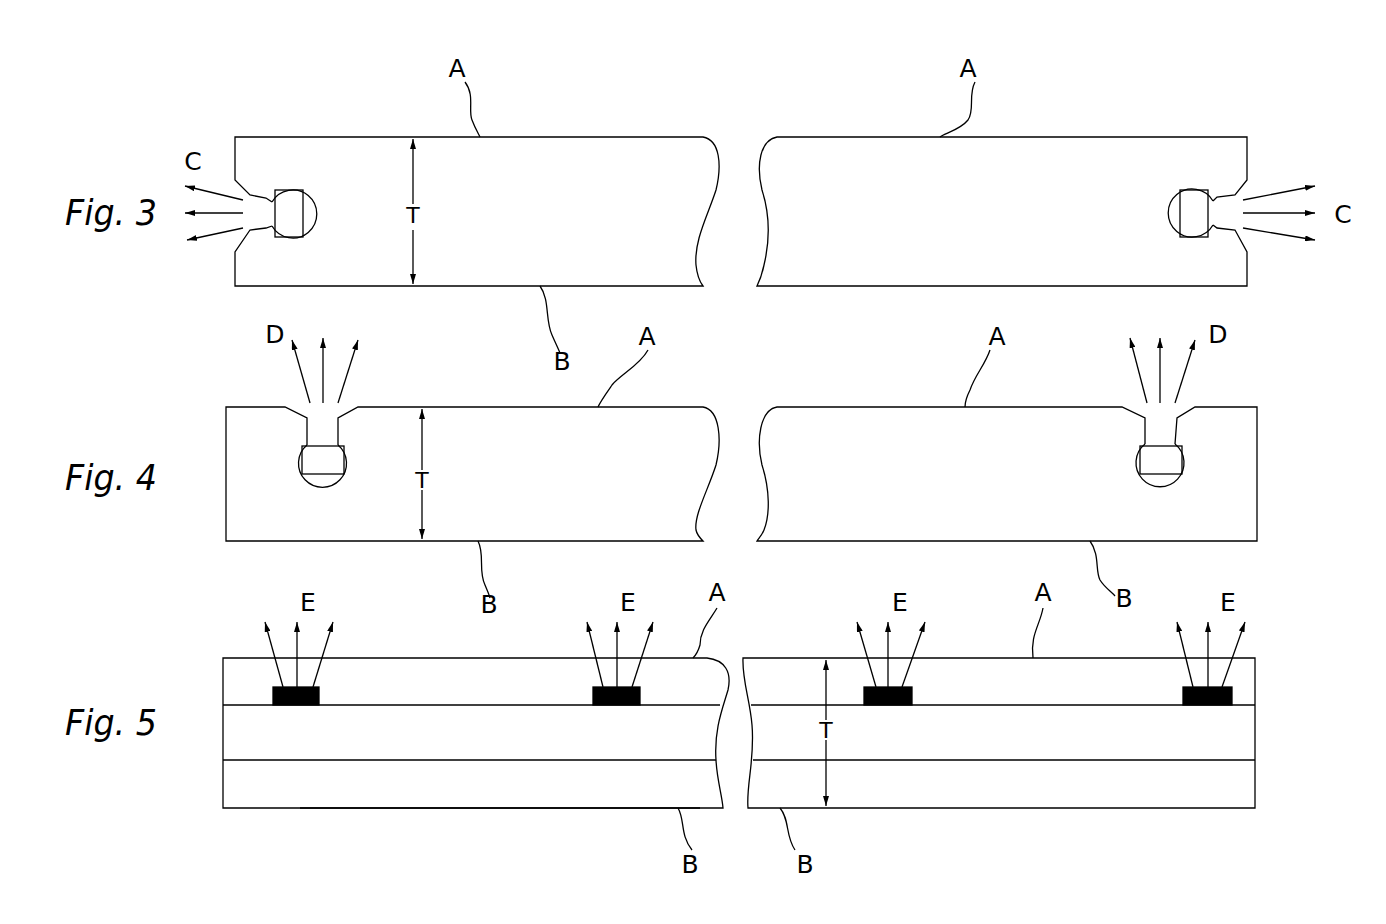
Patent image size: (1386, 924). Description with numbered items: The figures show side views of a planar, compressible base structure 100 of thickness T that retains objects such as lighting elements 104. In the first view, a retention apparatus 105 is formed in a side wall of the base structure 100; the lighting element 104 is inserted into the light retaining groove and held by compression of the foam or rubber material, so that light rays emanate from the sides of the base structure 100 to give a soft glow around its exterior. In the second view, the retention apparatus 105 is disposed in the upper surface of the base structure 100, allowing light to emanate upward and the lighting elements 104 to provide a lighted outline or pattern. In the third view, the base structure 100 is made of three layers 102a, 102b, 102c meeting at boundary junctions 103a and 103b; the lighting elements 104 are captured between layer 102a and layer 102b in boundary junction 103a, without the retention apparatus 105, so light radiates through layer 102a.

In FIG. 3, the base structure 100 is at (622, 190).
In FIG. 4, the base structure 100 is at (1273, 416).
In FIG. 5, the base structure 100 is at (1264, 718).
In FIG. 5, the layer 102a is at (418, 677).
In FIG. 5, the layer 102b is at (515, 737).
In FIG. 5, the layer 102c is at (563, 795).
In FIG. 5, the boundary junction 103a is at (1108, 705).
In FIG. 5, the boundary junction 103b is at (1003, 760).
In FIG. 3, the lighting element 104 is at (290, 226).
In FIG. 5, the lighting element 104 is at (287, 705).
In FIG. 3, the retention apparatus 105 is at (283, 180).
In FIG. 4, the retention apparatus 105 is at (302, 481).